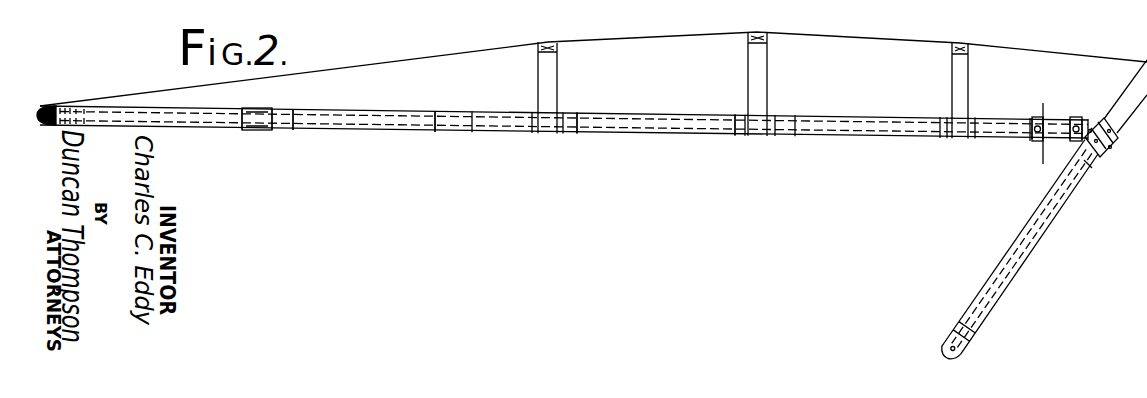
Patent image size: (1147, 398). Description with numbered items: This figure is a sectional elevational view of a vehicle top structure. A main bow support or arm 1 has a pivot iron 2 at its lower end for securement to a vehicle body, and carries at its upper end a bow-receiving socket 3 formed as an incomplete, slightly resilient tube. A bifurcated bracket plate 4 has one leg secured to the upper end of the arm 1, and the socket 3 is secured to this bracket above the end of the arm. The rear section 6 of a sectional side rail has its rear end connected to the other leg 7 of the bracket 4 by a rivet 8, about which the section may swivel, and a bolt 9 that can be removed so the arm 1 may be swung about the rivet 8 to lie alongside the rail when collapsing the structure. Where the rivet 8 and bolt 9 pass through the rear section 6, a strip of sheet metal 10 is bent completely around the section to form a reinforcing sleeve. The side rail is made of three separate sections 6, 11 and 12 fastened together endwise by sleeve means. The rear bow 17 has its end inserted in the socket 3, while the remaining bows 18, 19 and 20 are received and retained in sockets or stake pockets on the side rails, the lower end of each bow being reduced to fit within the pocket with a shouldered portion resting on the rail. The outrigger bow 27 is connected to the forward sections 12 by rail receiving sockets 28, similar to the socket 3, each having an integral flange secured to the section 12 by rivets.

The main bow support or arm 1 is at (1036, 246).
The pivot iron 2 is at (948, 341).
The bow-receiving socket 3 is at (694, 125).
The bifurcated bracket plate 4 is at (1086, 166).
The rear section of side rail 6 is at (899, 136).
The leg of bracket 7 is at (1044, 136).
The rivet 8 is at (1098, 128).
The bolt 9 is at (1033, 140).
The strip of sheet metal 10 is at (1035, 121).
The side rail section 11 is at (657, 124).
The side rail section 12 is at (378, 118).
The rear bow 17 is at (1140, 78).
The bow 18 is at (965, 68).
The bow 19 is at (762, 53).
The bow 20 is at (556, 58).
The outrigger bow 27 is at (180, 119).
The rail receiving socket 28 is at (259, 129).